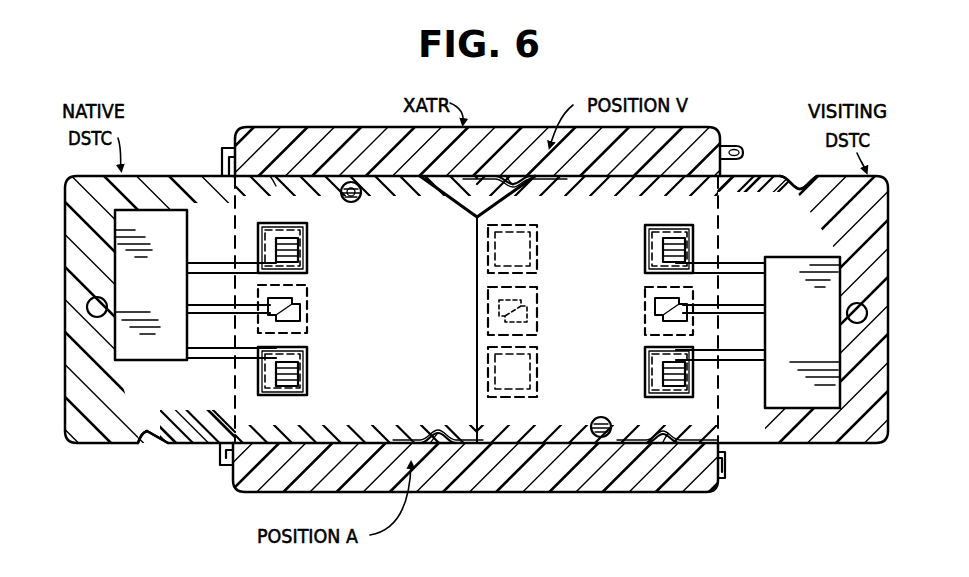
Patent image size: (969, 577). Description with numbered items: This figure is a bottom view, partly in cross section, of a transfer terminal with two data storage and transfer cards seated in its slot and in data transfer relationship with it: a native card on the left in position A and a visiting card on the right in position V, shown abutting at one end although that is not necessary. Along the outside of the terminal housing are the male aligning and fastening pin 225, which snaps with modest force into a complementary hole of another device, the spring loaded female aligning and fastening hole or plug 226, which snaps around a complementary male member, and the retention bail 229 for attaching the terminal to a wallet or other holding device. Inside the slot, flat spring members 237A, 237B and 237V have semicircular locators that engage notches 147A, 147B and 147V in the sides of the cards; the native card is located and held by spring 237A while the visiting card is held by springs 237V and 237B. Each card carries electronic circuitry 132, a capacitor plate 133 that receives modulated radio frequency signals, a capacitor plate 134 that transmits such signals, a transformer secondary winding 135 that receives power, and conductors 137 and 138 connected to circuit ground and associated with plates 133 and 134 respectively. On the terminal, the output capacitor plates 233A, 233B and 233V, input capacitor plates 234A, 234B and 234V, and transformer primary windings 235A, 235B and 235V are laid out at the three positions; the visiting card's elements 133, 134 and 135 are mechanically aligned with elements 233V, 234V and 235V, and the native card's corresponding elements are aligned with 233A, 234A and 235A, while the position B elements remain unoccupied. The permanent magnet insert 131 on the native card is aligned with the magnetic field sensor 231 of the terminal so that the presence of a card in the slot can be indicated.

The permanent magnet insert 131 is at (352, 181).
The electronic circuitry of the DSTC 132 is at (797, 267).
The capacitor plate 133 is at (295, 251).
The capacitor plate 134 is at (295, 370).
The transformer secondary winding 135 is at (302, 303).
The conductor 137 is at (295, 225).
The conductor 138 is at (300, 397).
The notch 147A is at (521, 186).
The notch 147B is at (802, 187).
The notch 147V is at (276, 178).
The male aligning and fastening pin 225 is at (737, 143).
The female aligning and fastening hole or plug 226 is at (727, 467).
The retention bail 229 is at (224, 172).
The magnetic field sensor 231 is at (346, 170).
The output capacitor plate 233A is at (303, 243).
The output capacitor plate 233B is at (493, 243).
The output capacitor plate 233V is at (647, 388).
The input capacitor plate 234A is at (307, 385).
The input capacitor plate 234B is at (485, 368).
The input capacitor plate 234V is at (647, 237).
The transformer primary winding 235A is at (307, 318).
The transformer primary winding 235B is at (497, 305).
The transformer primary winding 235V is at (650, 323).
The flat spring member 237A is at (445, 448).
The flat spring member 237B is at (670, 450).
The flat spring member 237V is at (513, 180).